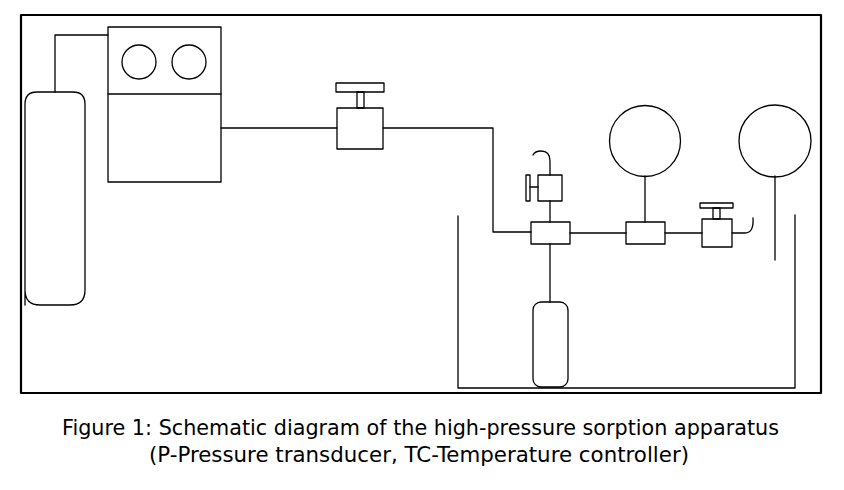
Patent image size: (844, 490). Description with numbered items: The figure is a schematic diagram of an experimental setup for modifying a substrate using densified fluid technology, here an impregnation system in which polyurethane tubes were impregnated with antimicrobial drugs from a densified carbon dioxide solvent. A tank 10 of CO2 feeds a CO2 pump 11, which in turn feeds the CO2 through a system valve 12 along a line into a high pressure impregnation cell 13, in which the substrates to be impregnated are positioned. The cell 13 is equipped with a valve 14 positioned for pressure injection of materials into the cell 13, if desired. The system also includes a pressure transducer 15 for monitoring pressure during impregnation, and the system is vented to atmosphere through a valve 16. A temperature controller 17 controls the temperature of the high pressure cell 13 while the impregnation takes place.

The tank 10 is at (85, 272).
The CO2 pump 11 is at (133, 182).
The system valve 12 is at (353, 149).
The high pressure impregnation cell 13 is at (568, 332).
The valve 14 is at (562, 183).
The pressure transducer 15 is at (652, 105).
The valve 16 is at (713, 247).
The temperature controller 17 is at (802, 110).